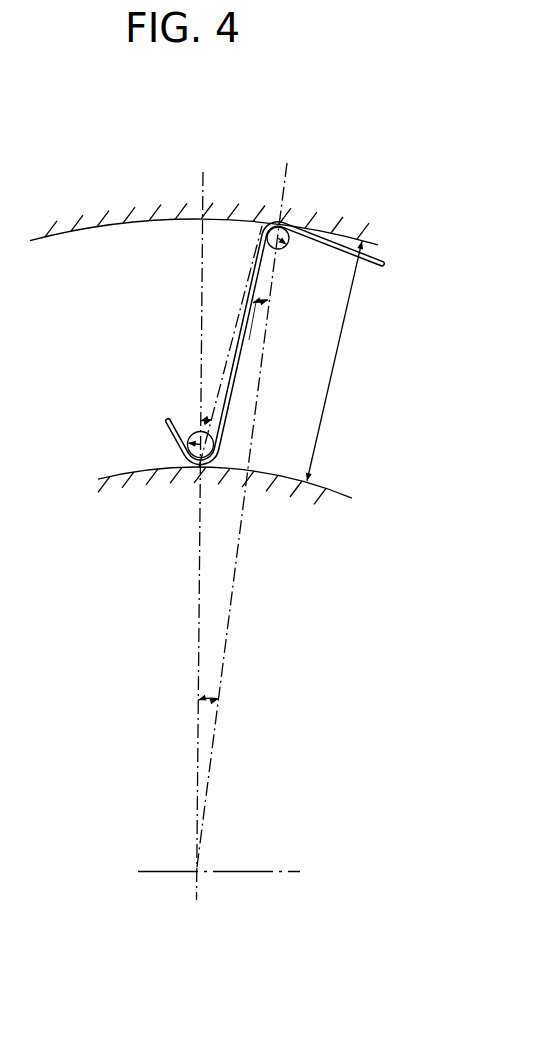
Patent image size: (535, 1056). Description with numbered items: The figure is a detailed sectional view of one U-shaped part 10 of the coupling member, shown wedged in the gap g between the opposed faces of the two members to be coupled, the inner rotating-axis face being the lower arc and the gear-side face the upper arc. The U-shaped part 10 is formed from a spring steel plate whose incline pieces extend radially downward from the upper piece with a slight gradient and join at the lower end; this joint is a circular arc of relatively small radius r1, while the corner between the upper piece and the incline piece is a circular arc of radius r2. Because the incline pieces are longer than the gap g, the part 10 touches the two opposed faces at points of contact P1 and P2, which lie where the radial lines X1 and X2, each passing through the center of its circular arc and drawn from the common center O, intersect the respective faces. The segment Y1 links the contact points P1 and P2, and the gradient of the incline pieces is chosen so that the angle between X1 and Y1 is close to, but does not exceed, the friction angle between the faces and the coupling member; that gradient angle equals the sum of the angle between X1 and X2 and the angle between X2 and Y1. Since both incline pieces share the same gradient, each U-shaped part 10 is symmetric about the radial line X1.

The U-shaped part 10 is at (183, 327).
The point of contact P1 is at (198, 468).
The point of contact P2 is at (283, 227).
The radial line X1 is at (203, 185).
The radial line X2 is at (285, 173).
The segment of a line Y1 is at (265, 262).
The origin / center of rotation O is at (219, 886).
The circular arc radius r1 is at (186, 452).
The circular arc radius r2 is at (287, 245).
The gap g is at (328, 389).